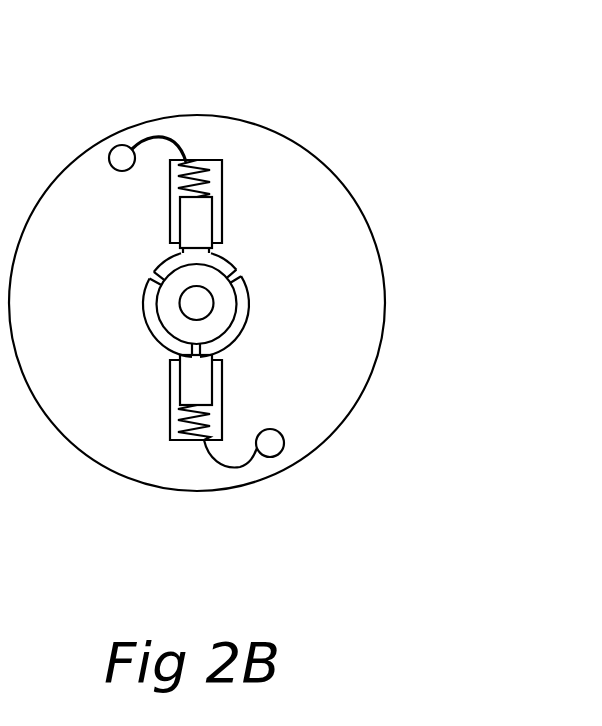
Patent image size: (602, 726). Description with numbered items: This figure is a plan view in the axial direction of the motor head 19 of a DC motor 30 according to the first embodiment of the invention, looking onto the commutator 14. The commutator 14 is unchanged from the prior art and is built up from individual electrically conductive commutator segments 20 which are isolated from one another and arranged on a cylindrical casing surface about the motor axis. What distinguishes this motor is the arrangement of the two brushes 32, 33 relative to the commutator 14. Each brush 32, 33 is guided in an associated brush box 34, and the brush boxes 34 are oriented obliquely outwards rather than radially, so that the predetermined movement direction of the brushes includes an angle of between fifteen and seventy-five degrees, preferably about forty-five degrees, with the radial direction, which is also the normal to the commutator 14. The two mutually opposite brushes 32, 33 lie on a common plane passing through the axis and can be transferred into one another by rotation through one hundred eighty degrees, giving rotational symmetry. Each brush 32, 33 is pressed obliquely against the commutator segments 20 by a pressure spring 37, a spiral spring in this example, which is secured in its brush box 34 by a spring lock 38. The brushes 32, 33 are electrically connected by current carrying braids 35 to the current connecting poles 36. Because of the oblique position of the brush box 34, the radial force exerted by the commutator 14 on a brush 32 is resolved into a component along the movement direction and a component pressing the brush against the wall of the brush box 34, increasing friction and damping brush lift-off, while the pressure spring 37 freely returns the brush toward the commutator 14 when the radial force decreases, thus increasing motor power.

The commutator 14 is at (246, 347).
The motor head 19 is at (163, 491).
The commutator segments 20 is at (243, 328).
The DC motor 30 is at (289, 289).
The brush 32 is at (222, 238).
The brush 33 is at (205, 385).
The brush box 34 is at (222, 202).
The current carrying braid 35 is at (159, 137).
The current connecting pole 36 is at (118, 147).
The pressure spring 37 is at (221, 166).
The spring lock 38 is at (197, 160).